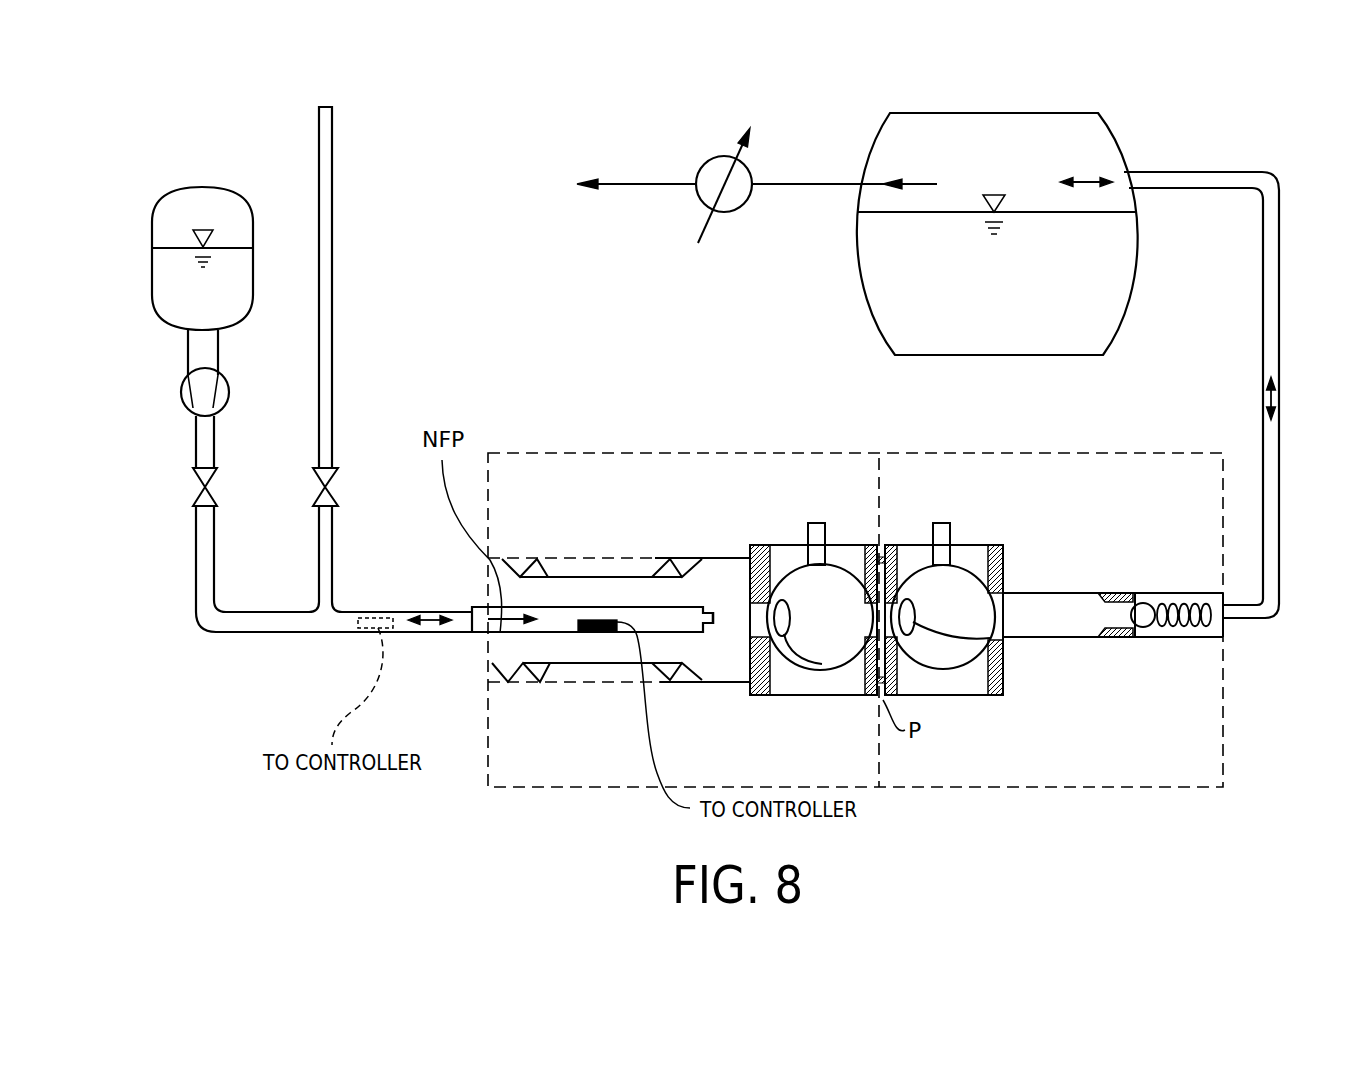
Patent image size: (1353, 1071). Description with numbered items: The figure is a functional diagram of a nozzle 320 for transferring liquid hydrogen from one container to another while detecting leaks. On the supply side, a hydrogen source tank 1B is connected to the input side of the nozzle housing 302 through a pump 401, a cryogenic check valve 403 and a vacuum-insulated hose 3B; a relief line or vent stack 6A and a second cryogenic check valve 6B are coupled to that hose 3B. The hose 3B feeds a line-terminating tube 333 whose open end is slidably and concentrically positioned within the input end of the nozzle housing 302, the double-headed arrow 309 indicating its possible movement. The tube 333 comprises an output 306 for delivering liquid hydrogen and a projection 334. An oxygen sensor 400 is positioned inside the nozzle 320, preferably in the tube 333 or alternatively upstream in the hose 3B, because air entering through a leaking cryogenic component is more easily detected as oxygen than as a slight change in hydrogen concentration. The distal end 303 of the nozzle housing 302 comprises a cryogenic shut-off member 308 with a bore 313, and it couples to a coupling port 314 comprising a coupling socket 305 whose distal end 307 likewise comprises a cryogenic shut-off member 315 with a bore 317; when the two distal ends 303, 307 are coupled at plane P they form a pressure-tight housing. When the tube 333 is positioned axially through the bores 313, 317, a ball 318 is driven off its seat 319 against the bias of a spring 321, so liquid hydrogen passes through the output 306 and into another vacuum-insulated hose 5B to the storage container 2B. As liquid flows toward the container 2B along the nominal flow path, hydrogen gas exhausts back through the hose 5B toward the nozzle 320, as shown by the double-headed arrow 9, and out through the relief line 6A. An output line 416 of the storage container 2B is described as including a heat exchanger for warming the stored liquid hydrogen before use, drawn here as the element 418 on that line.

The hydrogen source tank 1B is at (152, 260).
The relief line or vent stack 6A is at (332, 287).
The pump 401 is at (180, 398).
The cryogenic check valve 403 is at (197, 483).
The cryogenic check valve 6B is at (338, 494).
The vacuum-insulated hose 3B is at (198, 632).
The double-headed arrow 309 is at (428, 613).
The oxygen sensor 400 is at (343, 622).
The nozzle 320 is at (589, 416).
The coupling port 314 is at (1034, 507).
The line-terminating tube 333 is at (476, 632).
The output 306 is at (712, 608).
The projection 334 is at (713, 627).
The nozzle housing 302 is at (707, 557).
The distal end of the nozzle housing 303 is at (821, 577).
The cryogenic shut-off member 308 is at (783, 668).
The bore 313 is at (822, 664).
The distal end of the coupling socket 307 is at (985, 578).
The cryogenic shut-off member 315 is at (940, 666).
The bore 317 is at (990, 638).
The coupling socket 305 is at (1201, 611).
The seat 319 is at (1117, 637).
The ball 318 is at (1143, 612).
The spring 321 is at (1197, 627).
The vacuum-insulated hose 5B is at (1280, 263).
The double-headed arrow 9 is at (1087, 180).
The storage container 2B is at (1125, 310).
The output line 416 is at (813, 187).
The flow control valve 418 is at (725, 213).